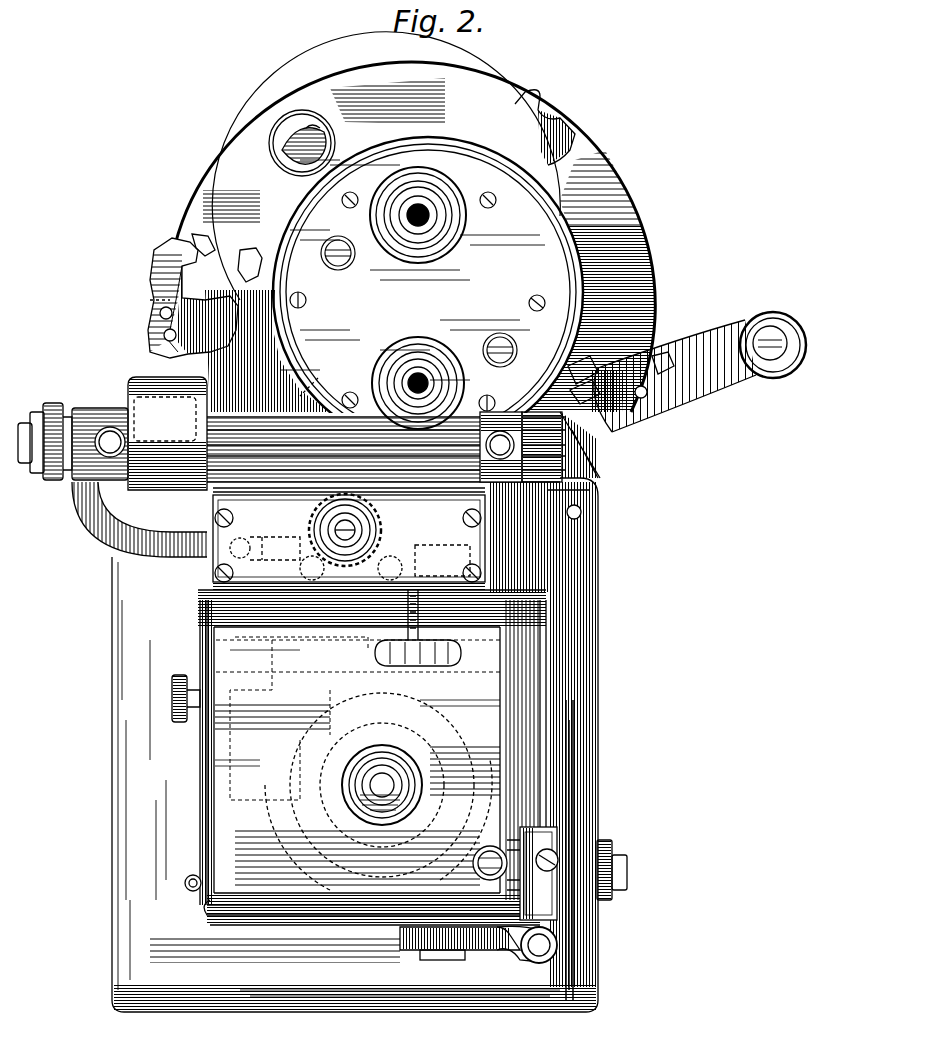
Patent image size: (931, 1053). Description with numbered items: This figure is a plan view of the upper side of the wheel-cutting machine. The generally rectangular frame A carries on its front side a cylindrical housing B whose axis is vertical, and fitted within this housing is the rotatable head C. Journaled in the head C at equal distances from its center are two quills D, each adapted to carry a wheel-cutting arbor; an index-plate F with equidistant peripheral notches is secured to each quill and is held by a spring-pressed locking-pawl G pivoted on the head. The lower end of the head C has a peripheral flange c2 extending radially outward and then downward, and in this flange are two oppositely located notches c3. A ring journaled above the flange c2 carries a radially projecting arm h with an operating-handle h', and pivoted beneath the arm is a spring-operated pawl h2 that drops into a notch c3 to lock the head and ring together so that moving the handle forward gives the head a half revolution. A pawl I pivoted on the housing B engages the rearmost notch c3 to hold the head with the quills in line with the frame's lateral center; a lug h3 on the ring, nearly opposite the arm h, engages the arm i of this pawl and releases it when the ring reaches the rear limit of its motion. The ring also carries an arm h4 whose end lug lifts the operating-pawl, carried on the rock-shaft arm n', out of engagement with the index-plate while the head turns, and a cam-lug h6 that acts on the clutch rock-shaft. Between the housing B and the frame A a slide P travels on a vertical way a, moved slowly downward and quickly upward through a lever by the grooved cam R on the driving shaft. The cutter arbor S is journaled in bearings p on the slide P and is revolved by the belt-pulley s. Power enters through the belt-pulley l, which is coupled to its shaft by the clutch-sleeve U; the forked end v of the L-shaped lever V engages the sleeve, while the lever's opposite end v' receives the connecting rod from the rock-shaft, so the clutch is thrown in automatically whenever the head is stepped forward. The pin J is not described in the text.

The cylindrical housing B is at (448, 140).
The peripheral flange c2 is at (627, 256).
The cam-lug h6 is at (538, 112).
The locking-pawl G is at (272, 156).
The index-plate F is at (326, 136).
The pin J is at (319, 112).
The head C is at (428, 292).
The quill D is at (415, 298).
The arbor S is at (312, 379).
The pawl I is at (185, 298).
The arm i is at (152, 300).
The peripheral notch c3 is at (196, 236).
The lug h3 is at (240, 262).
The bearing p is at (95, 412).
The belt-pulley s is at (104, 534).
The radially-projecting arm h is at (675, 376).
The operating-handle h' is at (776, 349).
The spring-operated pawl h2 is at (621, 374).
The arm h4 is at (592, 490).
The second arm n' is at (600, 521).
The frame A is at (364, 712).
The slide P is at (349, 539).
The vertical way a is at (350, 556).
The cam R is at (378, 791).
The belt-pulley l is at (585, 850).
The clutch-sleeve U is at (550, 863).
The forked end v is at (547, 871).
The opposite end of lever v' is at (460, 955).
The L-shaped lever V is at (603, 942).